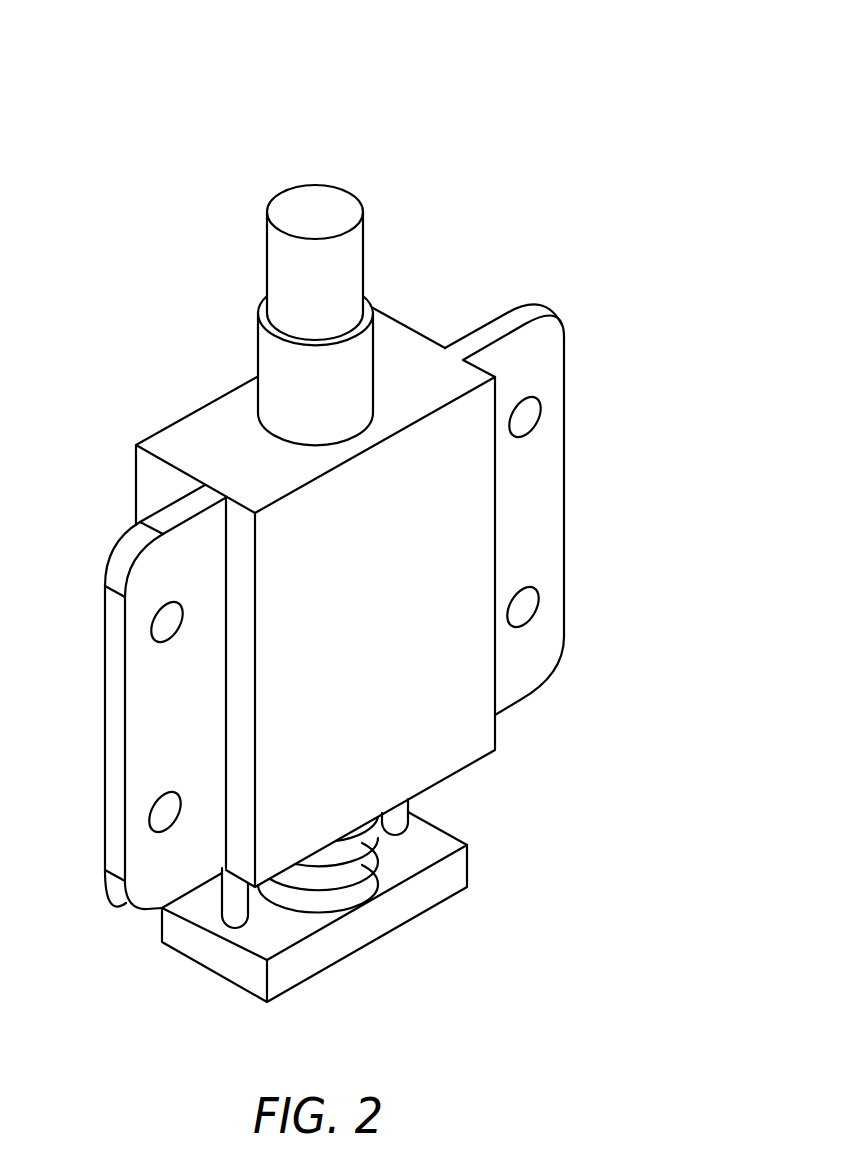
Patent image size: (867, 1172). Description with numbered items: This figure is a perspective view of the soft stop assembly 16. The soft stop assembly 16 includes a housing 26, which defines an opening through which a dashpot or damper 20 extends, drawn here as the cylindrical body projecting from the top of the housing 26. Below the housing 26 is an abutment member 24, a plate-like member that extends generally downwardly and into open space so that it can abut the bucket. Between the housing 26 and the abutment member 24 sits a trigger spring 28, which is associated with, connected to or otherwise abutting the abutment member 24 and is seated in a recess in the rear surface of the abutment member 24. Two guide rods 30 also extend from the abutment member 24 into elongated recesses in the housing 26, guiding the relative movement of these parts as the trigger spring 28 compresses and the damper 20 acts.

The soft stop assembly 16 is at (533, 142).
The dashpot or damper 20 is at (275, 361).
The abutment member 24 is at (452, 877).
The housing 26 is at (455, 538).
The trigger spring 28 is at (373, 877).
The guide rods 30 is at (230, 910).